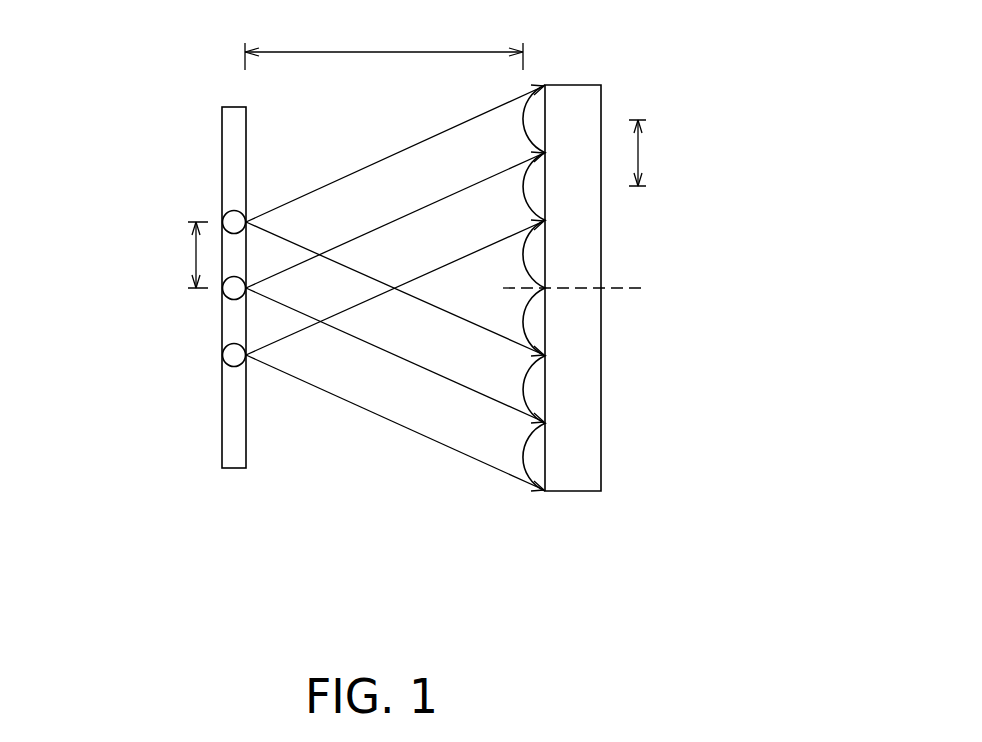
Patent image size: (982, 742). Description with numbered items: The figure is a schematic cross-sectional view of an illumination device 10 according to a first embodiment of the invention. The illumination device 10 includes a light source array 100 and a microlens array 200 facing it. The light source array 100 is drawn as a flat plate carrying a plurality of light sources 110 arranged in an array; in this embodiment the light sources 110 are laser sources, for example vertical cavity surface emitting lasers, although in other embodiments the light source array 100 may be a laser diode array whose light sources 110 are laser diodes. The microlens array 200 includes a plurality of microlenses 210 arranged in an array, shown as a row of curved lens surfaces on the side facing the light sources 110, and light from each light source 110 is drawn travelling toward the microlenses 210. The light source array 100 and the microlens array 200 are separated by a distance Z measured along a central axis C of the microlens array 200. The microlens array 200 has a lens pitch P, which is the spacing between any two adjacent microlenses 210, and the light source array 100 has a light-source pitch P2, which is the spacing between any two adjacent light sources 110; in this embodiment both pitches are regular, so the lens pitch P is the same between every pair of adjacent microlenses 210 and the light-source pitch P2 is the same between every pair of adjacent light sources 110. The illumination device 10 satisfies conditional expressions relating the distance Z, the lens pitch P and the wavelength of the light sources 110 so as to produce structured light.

The illumination device 10 is at (385, 326).
The light source array 100 is at (139, 287).
The light sources 110 is at (237, 352).
The microlens array 200 is at (539, 337).
The microlenses 210 is at (540, 463).
The central axis C is at (630, 288).
The lens pitch P is at (647, 153).
The light-source pitch P2 is at (179, 255).
The distance between the light source array and the microlens array Z is at (384, 46).